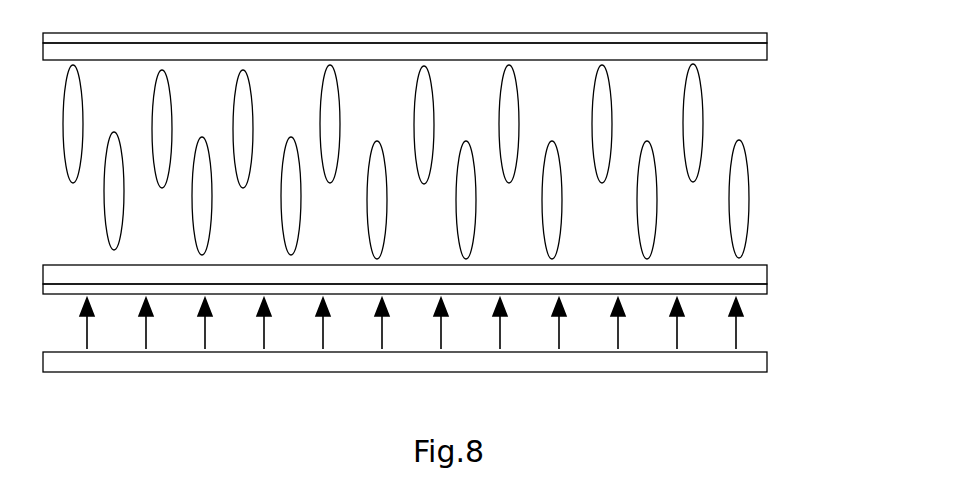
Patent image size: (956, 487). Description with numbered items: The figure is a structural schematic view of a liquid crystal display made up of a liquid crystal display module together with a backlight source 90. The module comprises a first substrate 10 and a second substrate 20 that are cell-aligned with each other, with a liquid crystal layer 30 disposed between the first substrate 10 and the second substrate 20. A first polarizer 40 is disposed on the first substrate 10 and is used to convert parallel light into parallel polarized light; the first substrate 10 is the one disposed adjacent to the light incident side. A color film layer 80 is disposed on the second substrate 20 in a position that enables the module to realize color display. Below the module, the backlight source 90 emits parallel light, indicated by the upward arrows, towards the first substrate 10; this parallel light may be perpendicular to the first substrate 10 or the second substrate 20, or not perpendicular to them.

The color film layer 80 is at (738, 35).
The second substrate 20 is at (738, 55).
The liquid crystal layer 30 is at (767, 61).
The first substrate 10 is at (739, 274).
The first polarizer 40 is at (739, 289).
The backlight source 90 is at (739, 362).